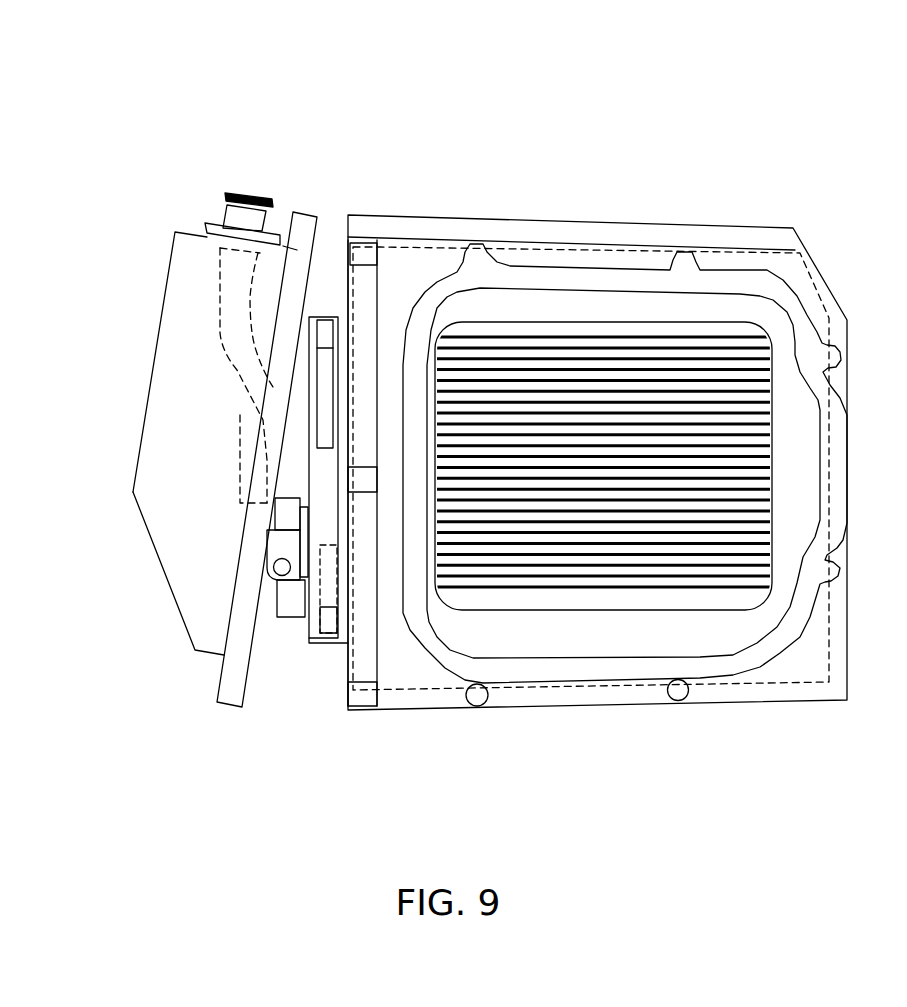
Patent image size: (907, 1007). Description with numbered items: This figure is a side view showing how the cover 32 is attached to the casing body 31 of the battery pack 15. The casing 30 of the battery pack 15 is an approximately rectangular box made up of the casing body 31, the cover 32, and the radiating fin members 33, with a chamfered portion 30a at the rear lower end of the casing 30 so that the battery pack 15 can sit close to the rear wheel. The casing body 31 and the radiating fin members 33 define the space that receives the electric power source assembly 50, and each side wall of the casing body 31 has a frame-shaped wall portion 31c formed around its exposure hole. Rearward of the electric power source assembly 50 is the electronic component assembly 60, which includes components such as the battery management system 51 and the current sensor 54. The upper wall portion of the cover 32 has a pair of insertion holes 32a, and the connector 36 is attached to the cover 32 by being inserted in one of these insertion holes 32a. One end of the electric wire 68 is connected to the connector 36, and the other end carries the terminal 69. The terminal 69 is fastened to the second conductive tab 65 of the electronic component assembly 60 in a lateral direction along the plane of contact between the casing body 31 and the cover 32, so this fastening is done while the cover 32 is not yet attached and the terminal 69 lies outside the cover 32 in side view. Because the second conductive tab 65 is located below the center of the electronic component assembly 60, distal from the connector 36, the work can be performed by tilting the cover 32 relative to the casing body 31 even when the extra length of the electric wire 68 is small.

The battery pack 15 is at (691, 132).
The casing 30 is at (838, 270).
The chamfered portion 30a is at (160, 567).
The casing body 31 is at (760, 226).
The frame-shaped wall portion 31c is at (797, 663).
The cover 32 is at (163, 295).
The insertion hole 32a is at (220, 248).
The radiating fin member 33 is at (728, 663).
The connector 36 is at (247, 192).
The electric power source assembly 50 is at (565, 243).
The battery management system (BMS) 51 is at (330, 387).
The current sensor 54 is at (330, 590).
The electronic component assembly 60 is at (322, 290).
The second conductive tab 65 is at (293, 603).
The electric wire 68 is at (220, 340).
The terminal 69 is at (259, 587).